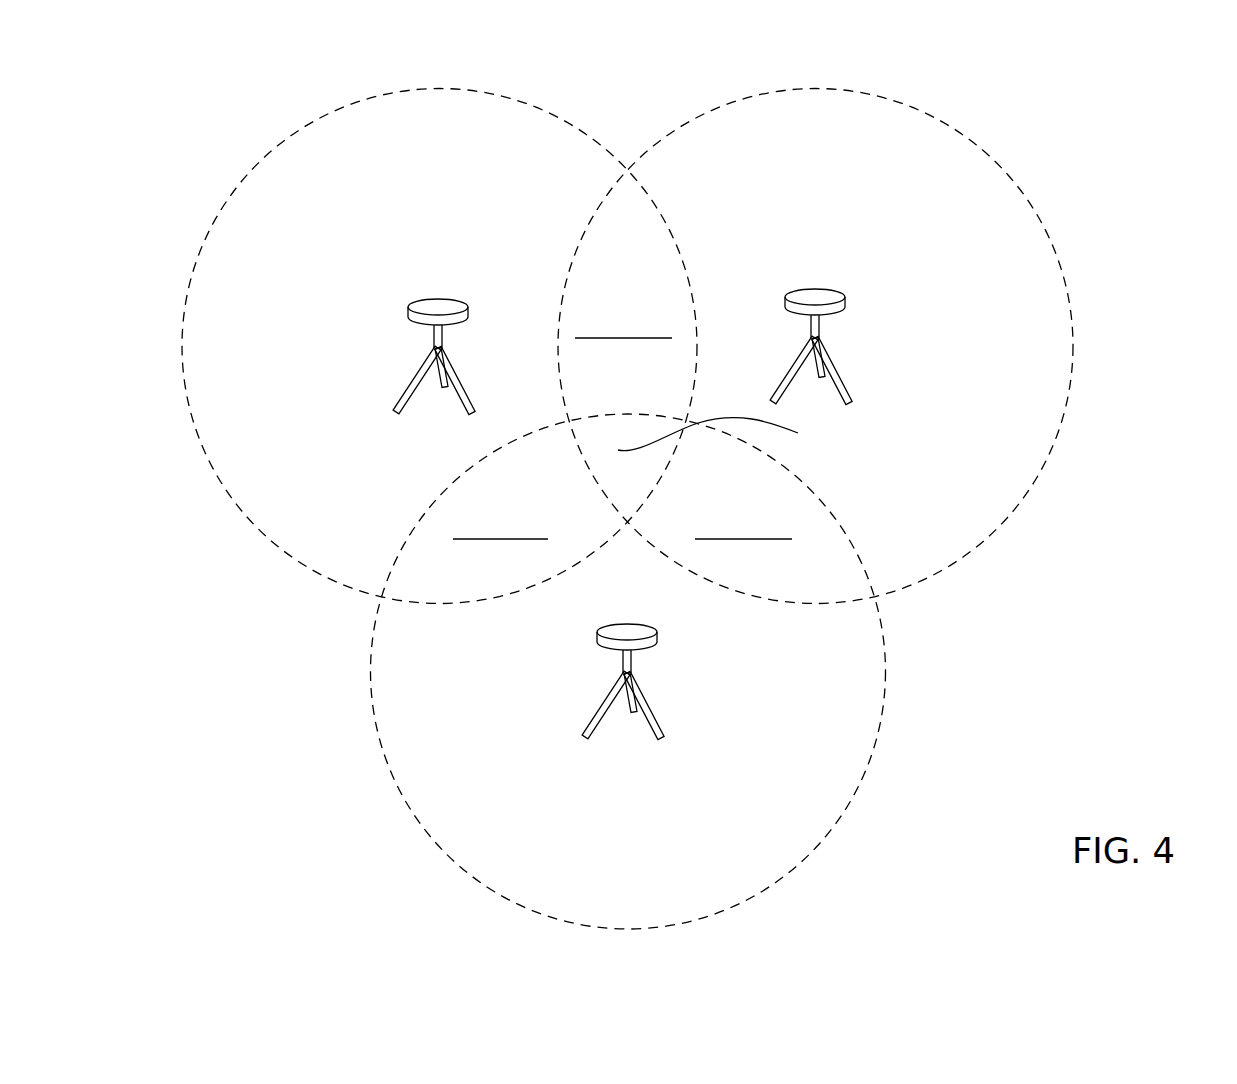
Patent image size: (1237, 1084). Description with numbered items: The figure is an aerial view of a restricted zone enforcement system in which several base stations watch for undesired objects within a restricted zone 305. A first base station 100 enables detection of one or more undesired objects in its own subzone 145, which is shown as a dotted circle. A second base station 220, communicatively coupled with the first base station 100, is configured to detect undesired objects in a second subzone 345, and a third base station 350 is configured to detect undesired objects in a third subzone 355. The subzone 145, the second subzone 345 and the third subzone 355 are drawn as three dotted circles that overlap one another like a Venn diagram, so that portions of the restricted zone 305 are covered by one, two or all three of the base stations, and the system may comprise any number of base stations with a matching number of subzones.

The base station 100 is at (405, 280).
The subzone 145 is at (457, 144).
The second base station 220 is at (848, 277).
The restricted zone 305 is at (703, 497).
The second subzone 345 is at (843, 144).
The third base station 350 is at (616, 758).
The third subzone 355 is at (640, 898).